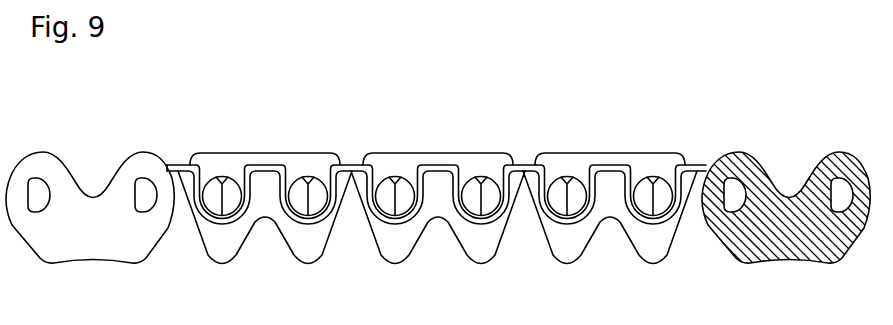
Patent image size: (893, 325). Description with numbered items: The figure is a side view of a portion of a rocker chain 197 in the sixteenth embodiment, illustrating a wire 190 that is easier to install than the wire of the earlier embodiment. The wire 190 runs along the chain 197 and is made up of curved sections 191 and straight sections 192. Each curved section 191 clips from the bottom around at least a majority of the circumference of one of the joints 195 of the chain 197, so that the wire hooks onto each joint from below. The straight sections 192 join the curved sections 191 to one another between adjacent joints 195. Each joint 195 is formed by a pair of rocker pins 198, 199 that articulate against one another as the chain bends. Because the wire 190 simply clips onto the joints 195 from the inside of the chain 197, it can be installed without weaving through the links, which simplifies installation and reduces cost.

The wire 190 is at (340, 165).
The curved sections 191 is at (303, 220).
The straight sections 192 is at (265, 167).
The joints 195 is at (223, 177).
The chain 197 is at (740, 98).
The rocker pin 198 is at (582, 190).
The rocker pin 199 is at (565, 188).